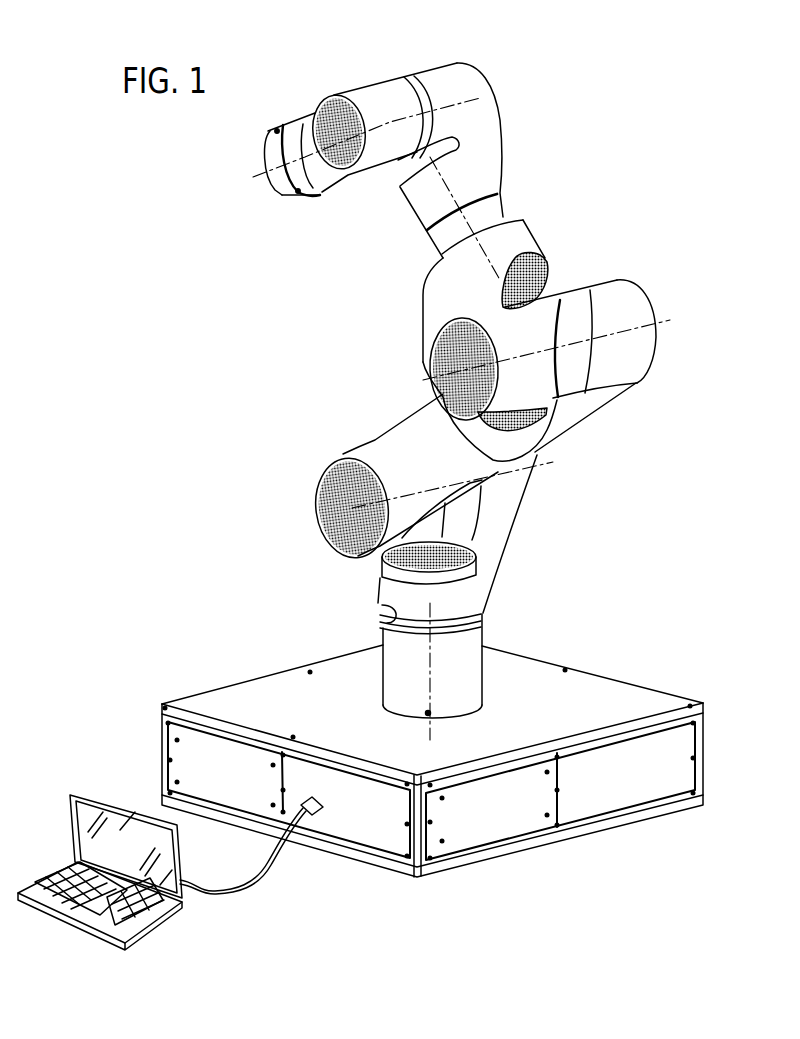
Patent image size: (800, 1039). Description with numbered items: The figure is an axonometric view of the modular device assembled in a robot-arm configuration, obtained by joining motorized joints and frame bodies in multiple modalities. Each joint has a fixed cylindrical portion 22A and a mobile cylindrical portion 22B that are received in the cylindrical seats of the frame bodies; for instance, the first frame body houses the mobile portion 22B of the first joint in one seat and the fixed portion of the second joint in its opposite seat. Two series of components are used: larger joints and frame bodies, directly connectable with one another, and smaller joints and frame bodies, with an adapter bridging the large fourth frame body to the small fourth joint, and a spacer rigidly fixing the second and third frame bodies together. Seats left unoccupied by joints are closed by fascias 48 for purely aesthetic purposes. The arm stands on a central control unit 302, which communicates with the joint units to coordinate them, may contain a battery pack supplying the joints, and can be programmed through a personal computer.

The central control unit 302 is at (230, 699).
The fixed cylindrical portion 22A is at (465, 700).
The mobile cylindrical portion 22B is at (380, 604).
The fascia 48 is at (336, 166).